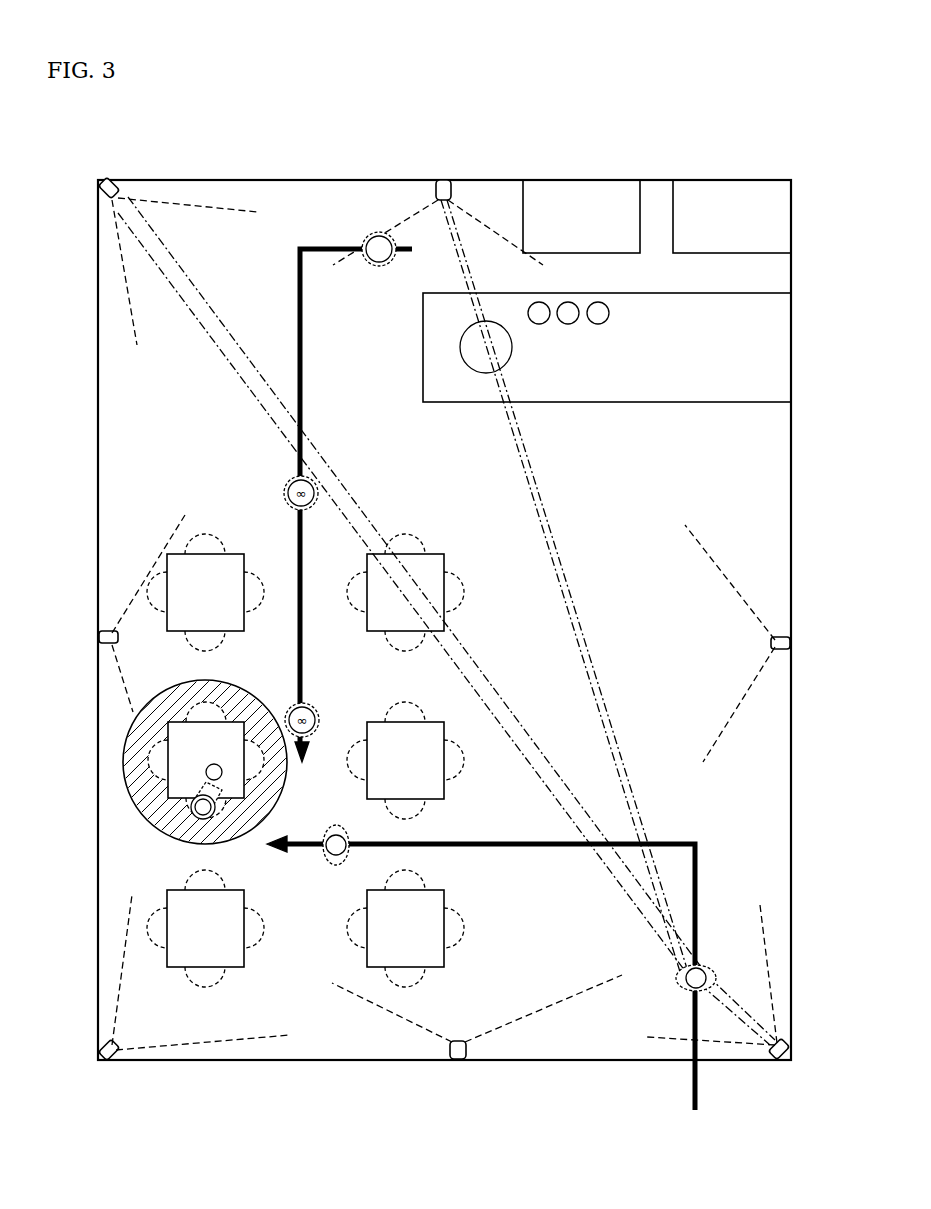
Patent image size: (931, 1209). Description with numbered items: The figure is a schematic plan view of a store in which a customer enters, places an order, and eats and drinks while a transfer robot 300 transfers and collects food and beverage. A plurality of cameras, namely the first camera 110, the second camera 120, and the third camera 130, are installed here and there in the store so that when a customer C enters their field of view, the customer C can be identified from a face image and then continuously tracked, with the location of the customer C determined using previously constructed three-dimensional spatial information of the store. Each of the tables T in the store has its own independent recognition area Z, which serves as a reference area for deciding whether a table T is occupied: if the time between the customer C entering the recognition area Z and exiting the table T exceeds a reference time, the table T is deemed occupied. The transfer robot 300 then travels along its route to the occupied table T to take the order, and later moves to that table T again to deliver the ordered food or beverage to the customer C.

The first camera 110 is at (108, 184).
The second camera 120 is at (443, 182).
The third camera 130 is at (780, 1058).
The transfer robot 300 is at (374, 265).
The table T is at (168, 730).
The recognition area Z is at (138, 812).
The customer C is at (704, 965).